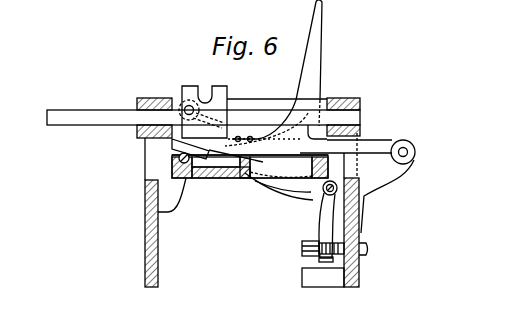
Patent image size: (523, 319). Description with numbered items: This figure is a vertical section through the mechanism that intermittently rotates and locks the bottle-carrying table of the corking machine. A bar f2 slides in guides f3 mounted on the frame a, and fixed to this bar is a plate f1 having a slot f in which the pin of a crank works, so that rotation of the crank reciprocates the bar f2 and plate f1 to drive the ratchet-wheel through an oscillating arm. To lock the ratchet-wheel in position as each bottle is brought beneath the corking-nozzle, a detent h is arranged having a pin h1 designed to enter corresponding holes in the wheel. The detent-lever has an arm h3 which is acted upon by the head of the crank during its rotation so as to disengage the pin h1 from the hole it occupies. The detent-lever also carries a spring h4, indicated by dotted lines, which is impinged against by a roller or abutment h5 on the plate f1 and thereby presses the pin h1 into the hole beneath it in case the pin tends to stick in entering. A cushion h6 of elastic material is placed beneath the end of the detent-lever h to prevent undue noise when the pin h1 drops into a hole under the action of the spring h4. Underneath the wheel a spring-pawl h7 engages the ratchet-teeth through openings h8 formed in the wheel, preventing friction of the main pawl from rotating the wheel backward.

The slot f is at (208, 99).
The plate f1 is at (227, 98).
The bar f2 is at (62, 121).
The guides f3 is at (137, 102).
The detent h is at (293, 150).
The pin h1 is at (238, 179).
The arm h3 is at (312, 72).
The spring h4 is at (211, 100).
The roller or abutment h5 is at (183, 98).
The cushion h6 is at (172, 141).
The spring-pawl h7 is at (275, 186).
The openings h8 is at (272, 174).
The frame a is at (160, 237).